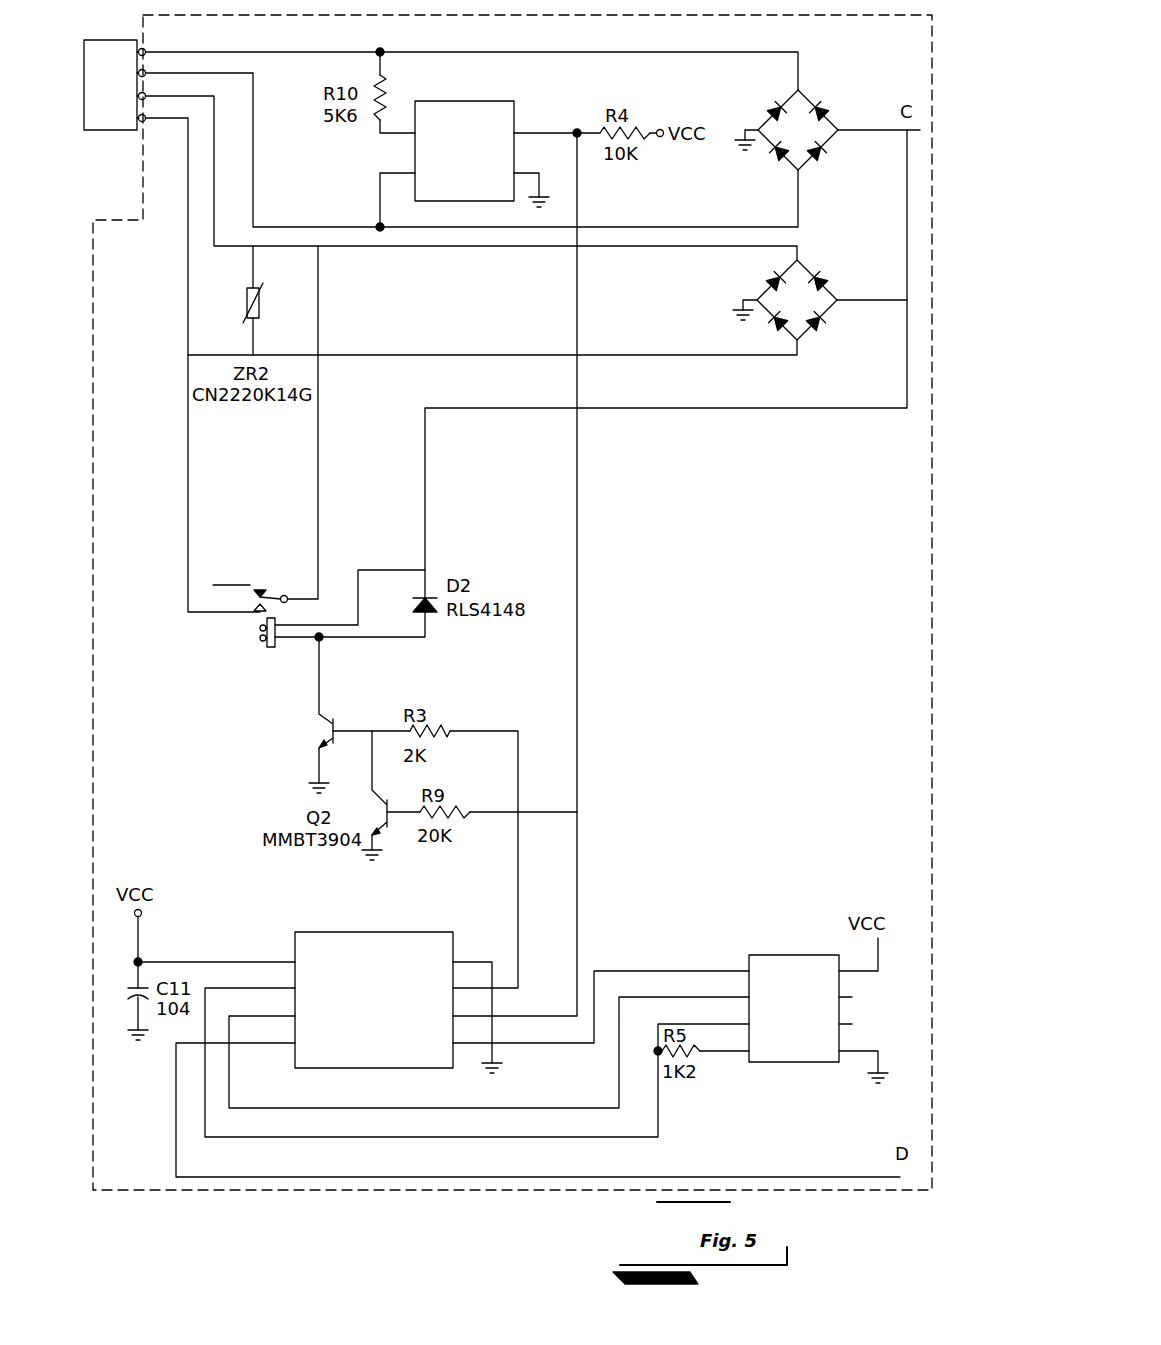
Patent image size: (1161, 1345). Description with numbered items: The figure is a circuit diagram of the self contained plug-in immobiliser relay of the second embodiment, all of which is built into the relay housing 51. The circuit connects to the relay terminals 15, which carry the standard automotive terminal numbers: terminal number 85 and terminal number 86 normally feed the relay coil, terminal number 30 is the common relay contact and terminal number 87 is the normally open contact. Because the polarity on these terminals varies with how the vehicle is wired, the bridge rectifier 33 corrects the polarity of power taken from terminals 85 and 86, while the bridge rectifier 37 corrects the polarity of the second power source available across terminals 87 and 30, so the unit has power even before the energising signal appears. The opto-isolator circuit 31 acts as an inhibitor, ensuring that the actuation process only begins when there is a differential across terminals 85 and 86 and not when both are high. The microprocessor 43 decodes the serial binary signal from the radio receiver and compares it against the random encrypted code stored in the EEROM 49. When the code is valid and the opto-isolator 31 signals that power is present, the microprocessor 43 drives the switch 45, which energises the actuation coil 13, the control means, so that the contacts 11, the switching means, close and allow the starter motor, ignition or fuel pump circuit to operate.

The relay terminals 15 is at (105, 131).
The terminal number 85 is at (472, 60).
The terminal number 86 is at (472, 142).
The terminal number 87 is at (472, 167).
The terminal number 30 is at (203, 365).
The opto-isolator circuit 31 is at (412, 140).
The bridge rectifier 33 is at (792, 165).
The bridge rectifier 37 is at (766, 290).
The contacts 11 is at (245, 597).
The actuation coil 13 is at (262, 626).
The switch 45 is at (334, 718).
The microprocessor 43 is at (405, 932).
The EEROM 49 is at (808, 955).
The relay housing 51 is at (348, 1190).